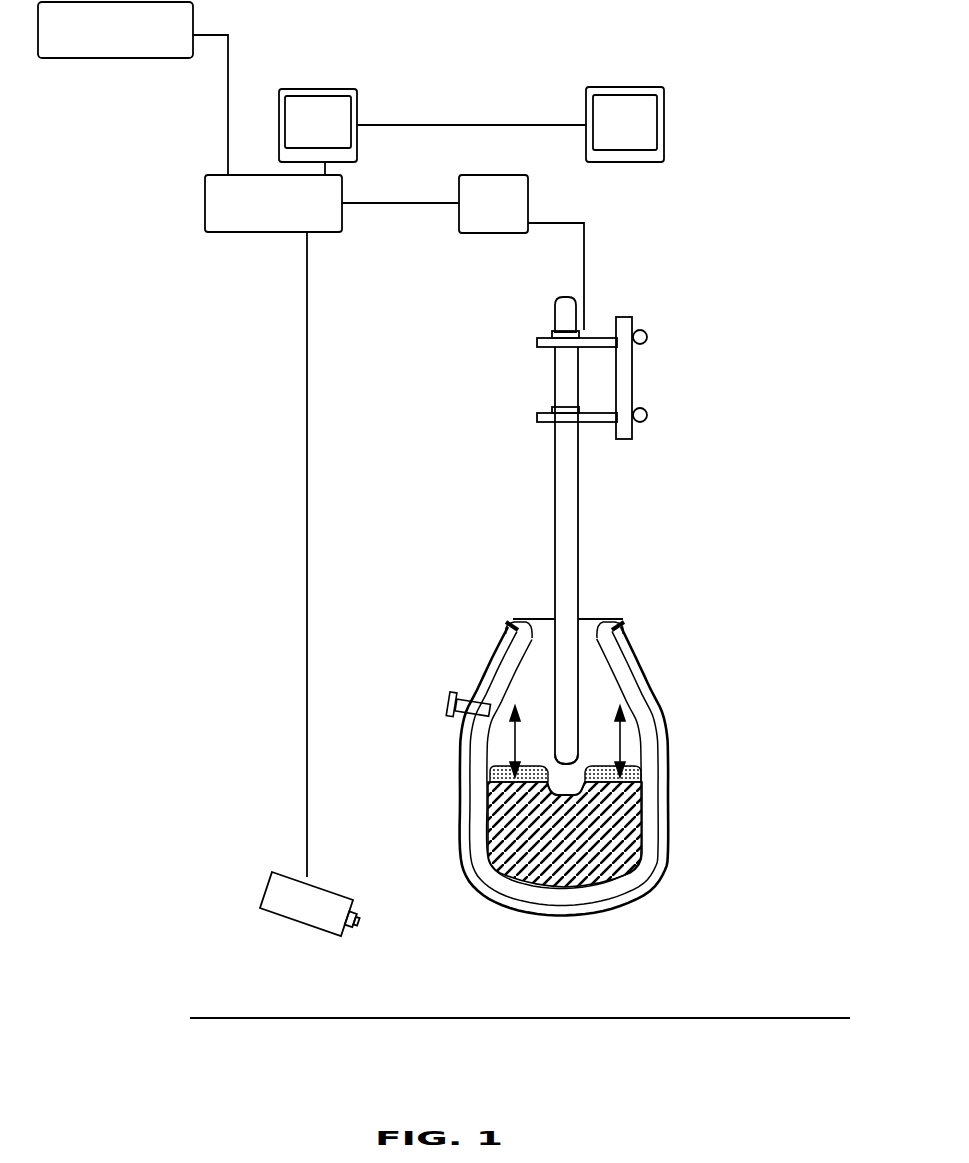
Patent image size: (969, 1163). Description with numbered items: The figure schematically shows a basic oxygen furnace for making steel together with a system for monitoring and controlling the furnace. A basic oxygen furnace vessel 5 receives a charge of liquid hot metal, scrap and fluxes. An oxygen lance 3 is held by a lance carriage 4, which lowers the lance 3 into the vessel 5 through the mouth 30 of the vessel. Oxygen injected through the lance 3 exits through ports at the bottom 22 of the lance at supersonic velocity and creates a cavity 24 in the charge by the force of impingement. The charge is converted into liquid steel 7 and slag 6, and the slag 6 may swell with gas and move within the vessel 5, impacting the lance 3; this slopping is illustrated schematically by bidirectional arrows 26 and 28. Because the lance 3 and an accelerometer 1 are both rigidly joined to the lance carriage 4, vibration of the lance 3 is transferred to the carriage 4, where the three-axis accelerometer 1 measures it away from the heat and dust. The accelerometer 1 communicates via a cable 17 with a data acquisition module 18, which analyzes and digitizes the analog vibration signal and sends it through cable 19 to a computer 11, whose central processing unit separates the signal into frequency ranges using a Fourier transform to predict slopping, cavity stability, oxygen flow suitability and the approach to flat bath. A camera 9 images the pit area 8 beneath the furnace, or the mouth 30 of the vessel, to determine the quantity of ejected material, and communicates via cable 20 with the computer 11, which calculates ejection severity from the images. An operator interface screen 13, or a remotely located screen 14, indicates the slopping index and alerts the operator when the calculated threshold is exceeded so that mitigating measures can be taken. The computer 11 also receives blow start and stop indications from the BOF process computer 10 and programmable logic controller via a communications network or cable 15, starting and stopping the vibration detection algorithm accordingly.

The accelerometer 1 is at (584, 328).
The oxygen lance 3 is at (555, 490).
The lance carriage 4 is at (537, 340).
The basic oxygen furnace vessel 5 is at (490, 650).
The slag 6 is at (627, 773).
The liquid steel 7 is at (622, 848).
The pit area 8 is at (257, 1017).
The camera 9 is at (293, 877).
The BOF process computer 10 is at (86, 58).
The computer 11 is at (243, 232).
The operator interface screen 13 is at (357, 108).
The remotely located screen 14 is at (583, 118).
The communications network or cable 15 is at (223, 116).
The cable 17 is at (583, 260).
The data acquisition module 18 is at (459, 222).
The cable 19 is at (380, 203).
The cable 20 is at (305, 411).
The bottom of the lance 22 is at (583, 773).
The cavity 24 is at (562, 790).
The bidirectional arrow 26 is at (513, 741).
The bidirectional arrow 28 is at (620, 740).
The mouth of the vessel 30 is at (522, 622).